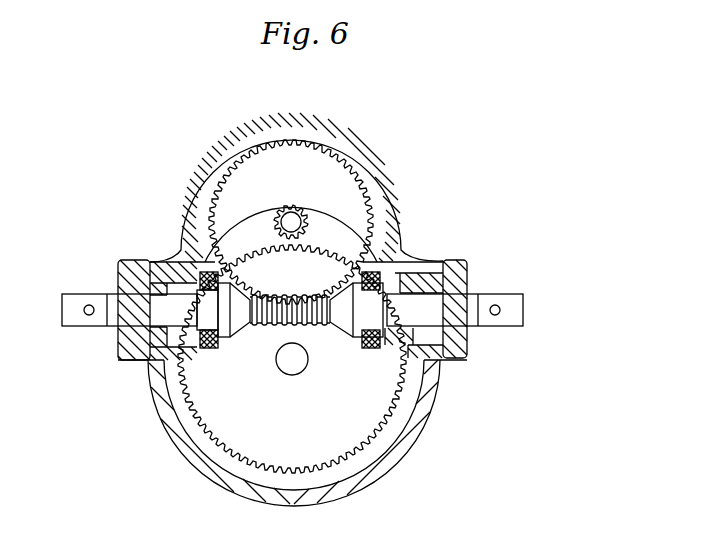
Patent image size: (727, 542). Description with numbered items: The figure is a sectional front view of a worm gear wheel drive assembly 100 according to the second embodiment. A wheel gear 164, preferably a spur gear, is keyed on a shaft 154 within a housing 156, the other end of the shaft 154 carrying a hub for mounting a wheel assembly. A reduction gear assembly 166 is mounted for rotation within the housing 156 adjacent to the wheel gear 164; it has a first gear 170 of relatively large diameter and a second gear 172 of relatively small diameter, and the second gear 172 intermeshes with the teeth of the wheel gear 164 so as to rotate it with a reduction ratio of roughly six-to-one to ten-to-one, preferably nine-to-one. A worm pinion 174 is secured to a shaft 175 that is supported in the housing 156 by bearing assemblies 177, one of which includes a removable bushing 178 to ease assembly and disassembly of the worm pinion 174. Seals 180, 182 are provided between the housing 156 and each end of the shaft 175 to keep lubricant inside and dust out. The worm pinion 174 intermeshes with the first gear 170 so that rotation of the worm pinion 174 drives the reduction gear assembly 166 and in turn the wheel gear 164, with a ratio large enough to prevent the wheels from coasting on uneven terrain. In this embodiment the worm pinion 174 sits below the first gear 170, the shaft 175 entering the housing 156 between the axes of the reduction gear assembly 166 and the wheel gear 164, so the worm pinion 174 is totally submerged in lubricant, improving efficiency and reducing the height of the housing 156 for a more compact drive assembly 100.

The worm gear wheel drive assembly 100 is at (632, 308).
The shaft 154 is at (298, 365).
The housing 156 is at (383, 177).
The wheel gear 164 is at (372, 390).
The reduction gear assembly 166 is at (327, 162).
The first gear 170 is at (225, 220).
The second gear 172 is at (275, 218).
The worm pinion 174 is at (408, 358).
The shaft 175 is at (522, 305).
The bearing assemblies 177 is at (152, 316).
The removable bushing 178 is at (158, 350).
The seal 180 is at (115, 330).
The seal 182 is at (468, 293).